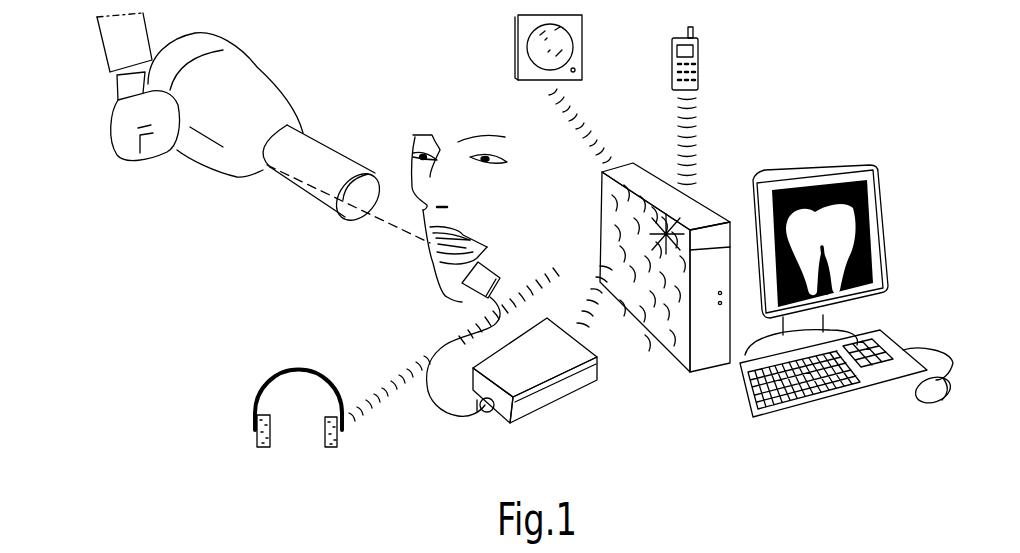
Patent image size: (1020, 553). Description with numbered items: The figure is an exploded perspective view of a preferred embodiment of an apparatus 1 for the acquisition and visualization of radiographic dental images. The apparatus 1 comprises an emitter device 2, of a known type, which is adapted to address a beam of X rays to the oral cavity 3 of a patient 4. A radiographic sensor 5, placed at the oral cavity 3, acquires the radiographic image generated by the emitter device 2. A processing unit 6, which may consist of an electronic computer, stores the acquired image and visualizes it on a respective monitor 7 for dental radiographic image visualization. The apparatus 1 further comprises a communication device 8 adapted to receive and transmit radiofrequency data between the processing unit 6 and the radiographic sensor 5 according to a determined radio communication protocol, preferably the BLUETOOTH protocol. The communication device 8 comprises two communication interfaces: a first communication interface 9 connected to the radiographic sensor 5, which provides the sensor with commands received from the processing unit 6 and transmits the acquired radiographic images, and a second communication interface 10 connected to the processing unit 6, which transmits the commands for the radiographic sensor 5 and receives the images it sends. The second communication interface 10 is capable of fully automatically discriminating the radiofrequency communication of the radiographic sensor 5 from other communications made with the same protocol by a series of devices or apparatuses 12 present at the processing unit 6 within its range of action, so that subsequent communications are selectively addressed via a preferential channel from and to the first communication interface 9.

The apparatus for the acquisition and visualization of radiographic dental images 1 is at (736, 126).
The emitter device 2 is at (243, 78).
The oral cavity 3 is at (440, 250).
The patient 4 is at (455, 124).
The radiographic sensor 5 is at (483, 273).
The processing unit 6 is at (631, 143).
The monitor 7 is at (880, 293).
The communication device 8 is at (614, 360).
The first communication interface 9 is at (548, 398).
The second communication interface 10 is at (700, 184).
The devices or apparatuses 12 is at (580, 39).